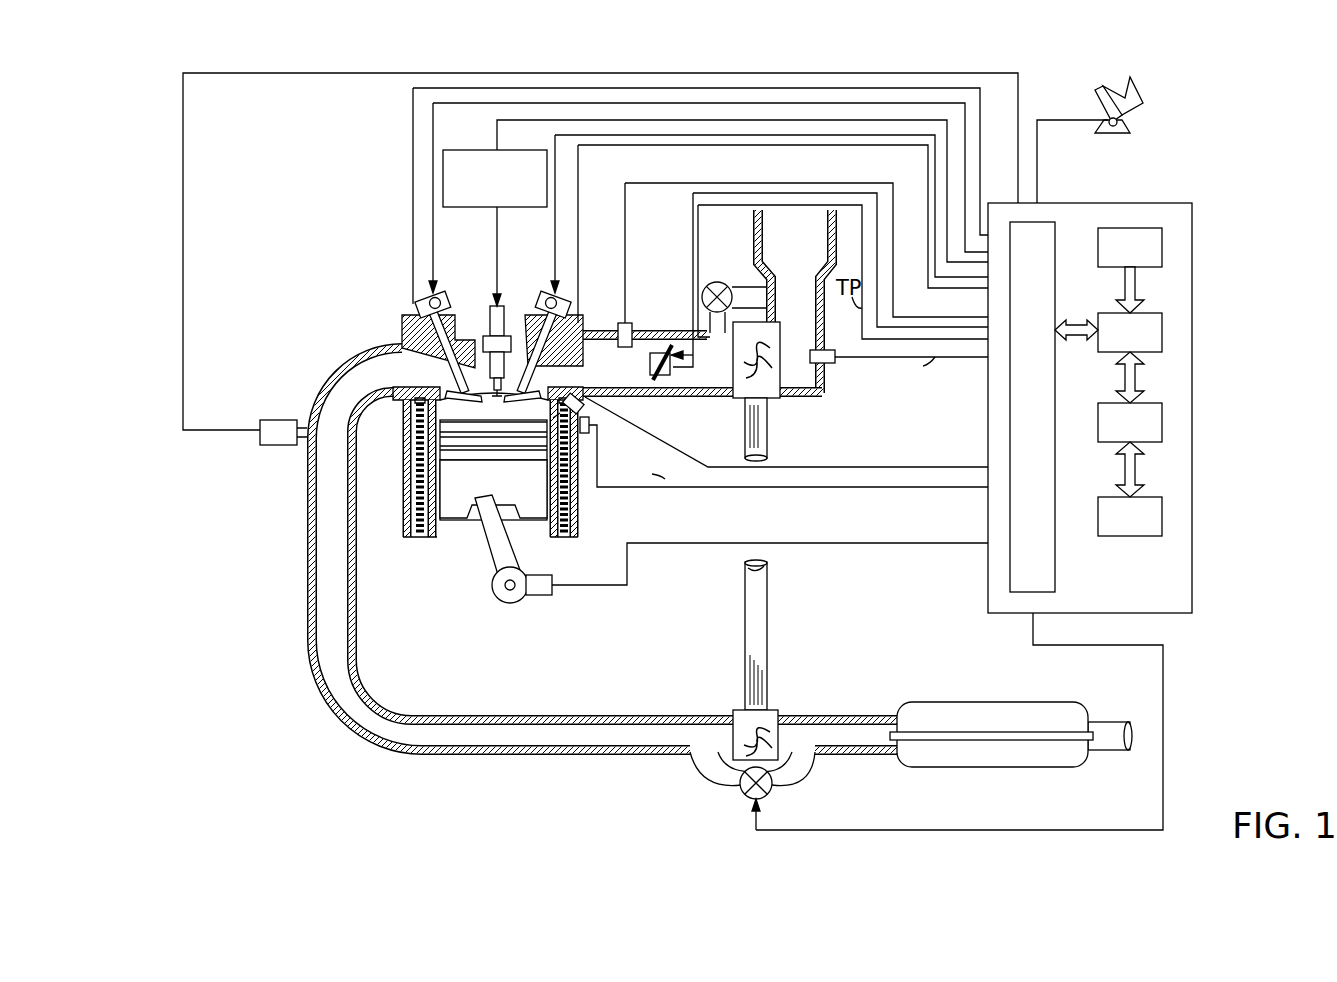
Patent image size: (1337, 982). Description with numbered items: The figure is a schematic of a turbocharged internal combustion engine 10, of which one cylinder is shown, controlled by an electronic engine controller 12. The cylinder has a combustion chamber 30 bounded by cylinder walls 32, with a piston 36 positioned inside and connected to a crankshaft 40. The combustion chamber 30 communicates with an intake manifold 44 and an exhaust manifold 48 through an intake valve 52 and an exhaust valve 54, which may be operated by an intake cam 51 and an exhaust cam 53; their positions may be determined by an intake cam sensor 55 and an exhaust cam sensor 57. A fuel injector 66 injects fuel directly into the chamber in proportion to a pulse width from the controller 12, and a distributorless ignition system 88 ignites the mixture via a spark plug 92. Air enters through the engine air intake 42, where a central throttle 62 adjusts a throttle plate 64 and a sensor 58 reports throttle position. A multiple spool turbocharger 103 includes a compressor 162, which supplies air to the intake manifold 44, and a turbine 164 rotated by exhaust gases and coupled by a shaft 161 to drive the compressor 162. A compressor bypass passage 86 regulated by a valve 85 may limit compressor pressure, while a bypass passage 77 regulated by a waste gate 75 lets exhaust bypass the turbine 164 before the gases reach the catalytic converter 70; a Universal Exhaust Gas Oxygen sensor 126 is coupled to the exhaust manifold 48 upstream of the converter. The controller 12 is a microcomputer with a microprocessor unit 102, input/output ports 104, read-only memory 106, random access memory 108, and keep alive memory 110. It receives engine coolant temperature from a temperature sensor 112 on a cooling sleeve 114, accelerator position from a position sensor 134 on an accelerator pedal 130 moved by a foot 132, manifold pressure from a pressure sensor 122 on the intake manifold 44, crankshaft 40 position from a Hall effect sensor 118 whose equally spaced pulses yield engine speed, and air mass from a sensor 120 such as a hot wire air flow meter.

The internal combustion engine 10 is at (338, 268).
The electronic engine controller 12 is at (1134, 391).
The combustion chamber 30 is at (488, 405).
The cylinder walls 32 is at (443, 530).
The piston 36 is at (476, 495).
The crankshaft 40 is at (498, 598).
The engine air intake 42 is at (800, 253).
The intake manifold 44 is at (620, 375).
The exhaust manifold 48 is at (389, 383).
The intake cam 51 is at (557, 294).
The intake valve 52 is at (502, 336).
The exhaust cam 53 is at (443, 293).
The exhaust valve 54 is at (437, 340).
The intake cam sensor 55 is at (566, 306).
The exhaust cam sensor 57 is at (418, 303).
The throttle position sensor 58 is at (673, 378).
The central throttle 62 is at (660, 348).
The throttle plate 64 is at (671, 347).
The fuel injector 66 is at (590, 412).
The catalytic converter 70 is at (905, 766).
The waste gate 75 is at (765, 793).
The bypass passage 77 is at (708, 770).
The valve 85 is at (717, 282).
The compressor bypass passage 86 is at (752, 287).
The distributorless ignition system 88 is at (458, 150).
The spark plug 92 is at (489, 328).
The microprocessor unit 102 is at (1165, 335).
The multiple spool turbocharger 103 is at (822, 412).
The input/output ports 104 is at (1058, 228).
The read-only memory 106 is at (1165, 248).
The random access memory 108 is at (1165, 425).
The keep alive memory 110 is at (1165, 520).
The temperature sensor 112 is at (587, 433).
The cooling sleeve 114 is at (568, 506).
The Hall effect sensor 118 is at (535, 597).
The air mass sensor 120 is at (828, 350).
The pressure sensor 122 is at (630, 322).
The Universal Exhaust Gas Oxygen sensor 126 is at (262, 422).
The accelerator pedal 130 is at (1092, 100).
The foot 132 is at (1138, 92).
The position sensor 134 is at (1122, 121).
The shaft 161 is at (767, 442).
The compressor 162 is at (778, 400).
The turbine 164 is at (733, 712).